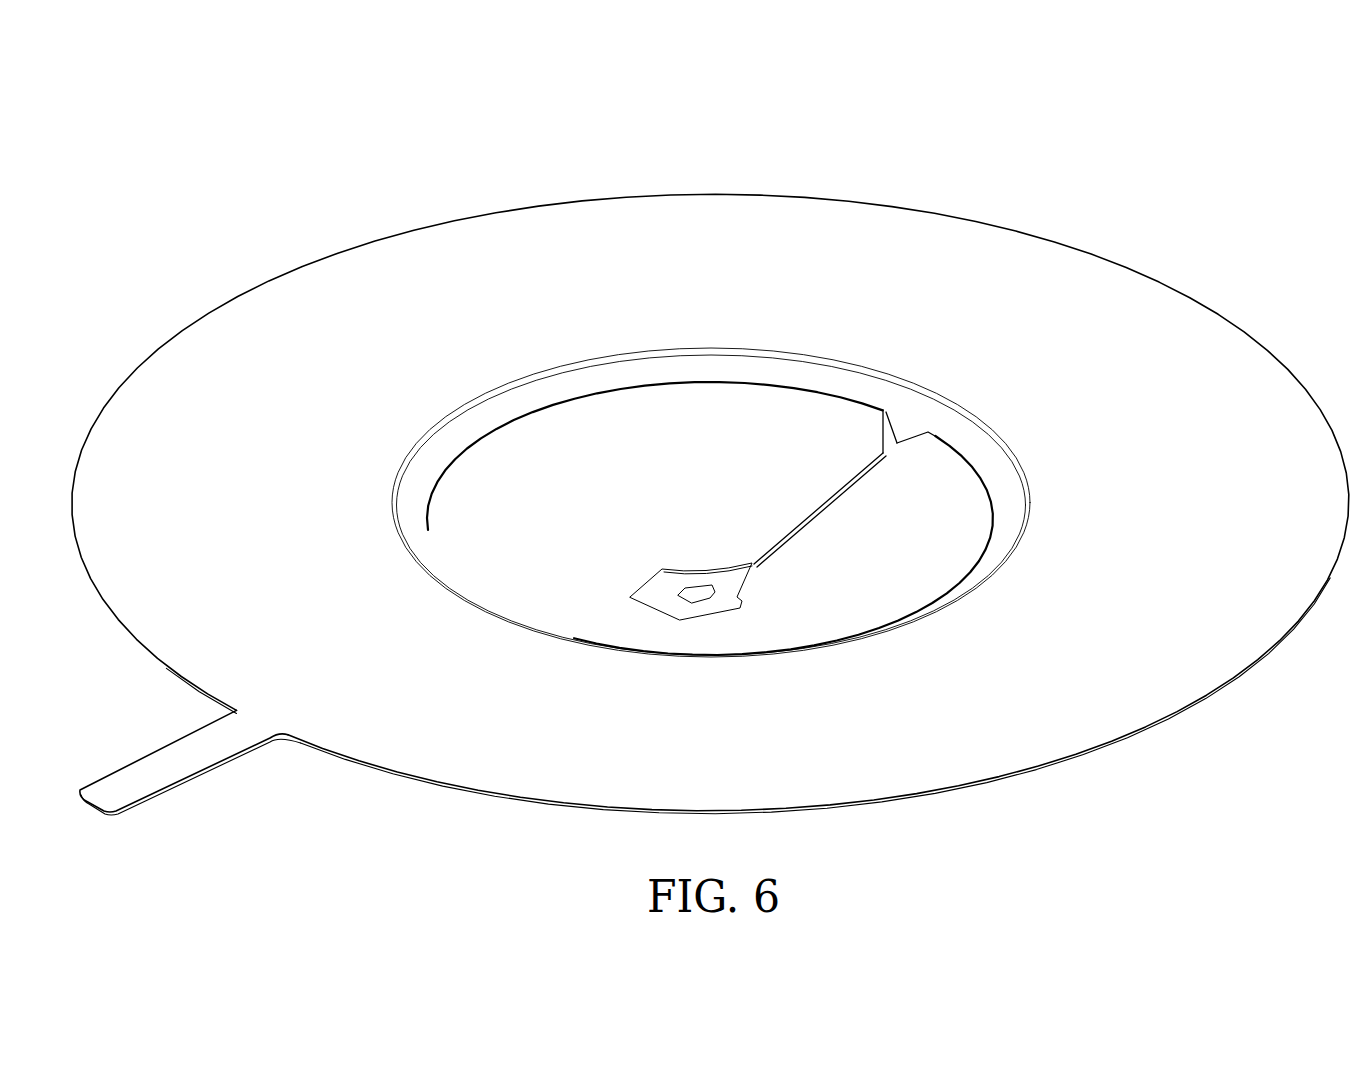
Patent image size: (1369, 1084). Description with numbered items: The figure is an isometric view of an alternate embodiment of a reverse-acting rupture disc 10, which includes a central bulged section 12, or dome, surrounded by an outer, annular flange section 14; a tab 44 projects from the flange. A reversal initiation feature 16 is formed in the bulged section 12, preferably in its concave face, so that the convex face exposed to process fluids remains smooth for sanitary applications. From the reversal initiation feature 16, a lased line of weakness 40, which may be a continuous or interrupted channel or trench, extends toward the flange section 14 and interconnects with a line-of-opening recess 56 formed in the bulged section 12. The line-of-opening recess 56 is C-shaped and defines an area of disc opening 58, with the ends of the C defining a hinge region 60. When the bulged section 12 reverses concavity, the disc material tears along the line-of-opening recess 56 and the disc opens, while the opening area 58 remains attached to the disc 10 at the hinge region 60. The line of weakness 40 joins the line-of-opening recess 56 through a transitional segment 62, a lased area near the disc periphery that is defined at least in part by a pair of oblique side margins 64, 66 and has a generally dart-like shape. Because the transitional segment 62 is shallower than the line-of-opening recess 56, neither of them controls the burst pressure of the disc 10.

The reverse-acting rupture disc 10 is at (859, 165).
The bulged section 12 is at (553, 388).
The flange section 14 is at (566, 768).
The reversal initiation feature 16 is at (644, 568).
The line of weakness 40 is at (822, 512).
The tab 44 is at (160, 767).
The line-of-opening recess 56 is at (798, 389).
The disc opening area 58 is at (700, 440).
The hinge region 60 is at (538, 613).
The transitional segment 62 is at (890, 428).
The oblique side margin 64 is at (905, 446).
The oblique side margin 66 is at (882, 432).